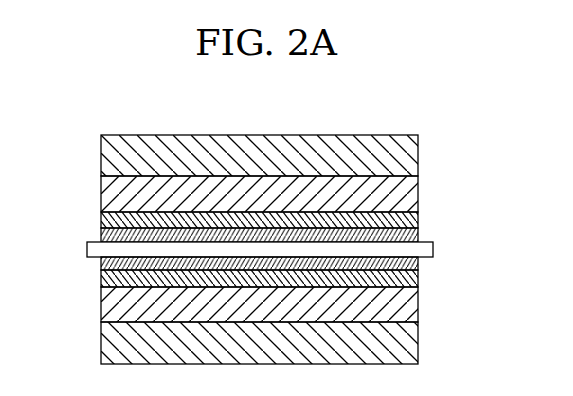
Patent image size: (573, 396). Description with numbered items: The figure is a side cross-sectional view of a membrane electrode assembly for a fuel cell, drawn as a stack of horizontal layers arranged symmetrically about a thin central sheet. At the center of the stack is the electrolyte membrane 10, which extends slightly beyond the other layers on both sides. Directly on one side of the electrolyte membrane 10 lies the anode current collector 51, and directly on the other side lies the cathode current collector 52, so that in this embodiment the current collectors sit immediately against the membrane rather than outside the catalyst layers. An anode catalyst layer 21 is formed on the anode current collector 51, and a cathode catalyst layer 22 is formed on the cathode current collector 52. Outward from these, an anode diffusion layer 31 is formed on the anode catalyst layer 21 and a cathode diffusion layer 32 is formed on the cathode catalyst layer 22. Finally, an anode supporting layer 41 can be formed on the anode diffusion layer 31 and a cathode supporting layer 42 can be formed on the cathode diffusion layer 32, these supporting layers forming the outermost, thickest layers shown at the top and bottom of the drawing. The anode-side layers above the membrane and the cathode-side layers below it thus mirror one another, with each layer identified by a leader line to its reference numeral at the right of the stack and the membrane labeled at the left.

The electrolyte membrane 10 is at (87, 249).
The anode catalyst layer 21 is at (418, 219).
The cathode catalyst layer 22 is at (418, 281).
The anode diffusion layer 31 is at (418, 192).
The cathode diffusion layer 32 is at (412, 304).
The anode supporting layer 41 is at (418, 156).
The cathode supporting layer 42 is at (412, 346).
The anode current collector 51 is at (418, 238).
The cathode current collector 52 is at (418, 266).